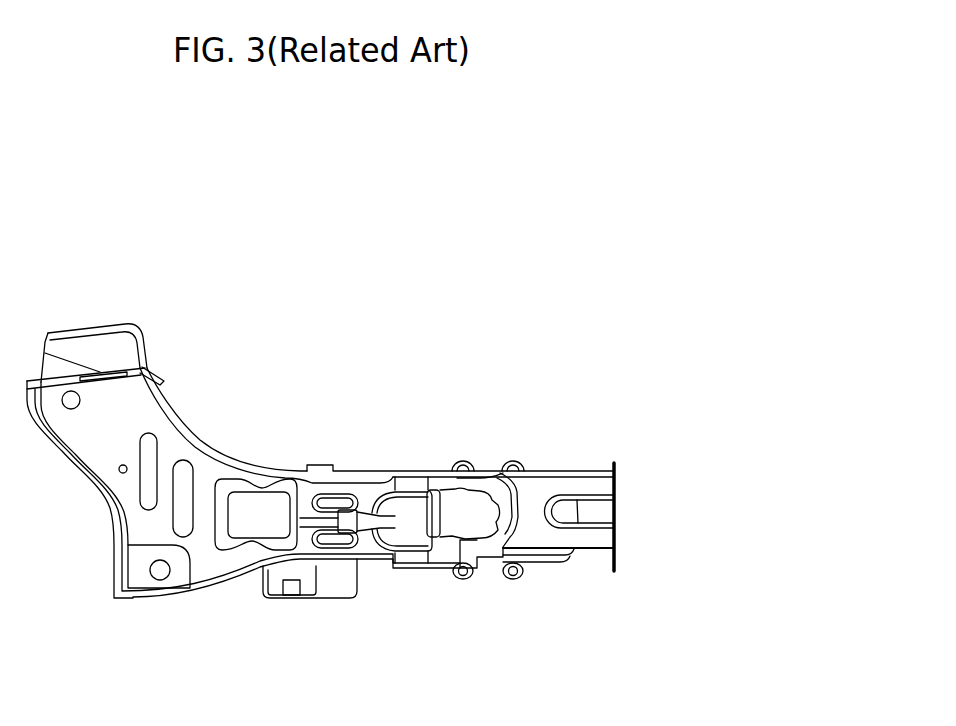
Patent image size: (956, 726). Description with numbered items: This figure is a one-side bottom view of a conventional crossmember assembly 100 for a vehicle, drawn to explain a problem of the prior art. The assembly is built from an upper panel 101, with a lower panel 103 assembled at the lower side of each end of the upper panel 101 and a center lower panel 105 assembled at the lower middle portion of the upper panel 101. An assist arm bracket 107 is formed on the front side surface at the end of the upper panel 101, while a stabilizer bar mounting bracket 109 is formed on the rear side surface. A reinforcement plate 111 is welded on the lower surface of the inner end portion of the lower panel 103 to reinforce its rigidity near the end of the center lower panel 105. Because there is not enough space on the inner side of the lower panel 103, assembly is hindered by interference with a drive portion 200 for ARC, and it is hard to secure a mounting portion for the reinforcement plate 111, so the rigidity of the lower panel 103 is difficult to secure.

The crossmember assembly 100 is at (404, 400).
The upper panel 101 is at (117, 562).
The lower panel 103 is at (213, 558).
The center lower panel 105 is at (592, 538).
The assist arm bracket 107 is at (140, 343).
The stabilizer bar mounting bracket 109 is at (337, 585).
The reinforcement plate 111 is at (413, 567).
The drive portion 200 is at (470, 523).